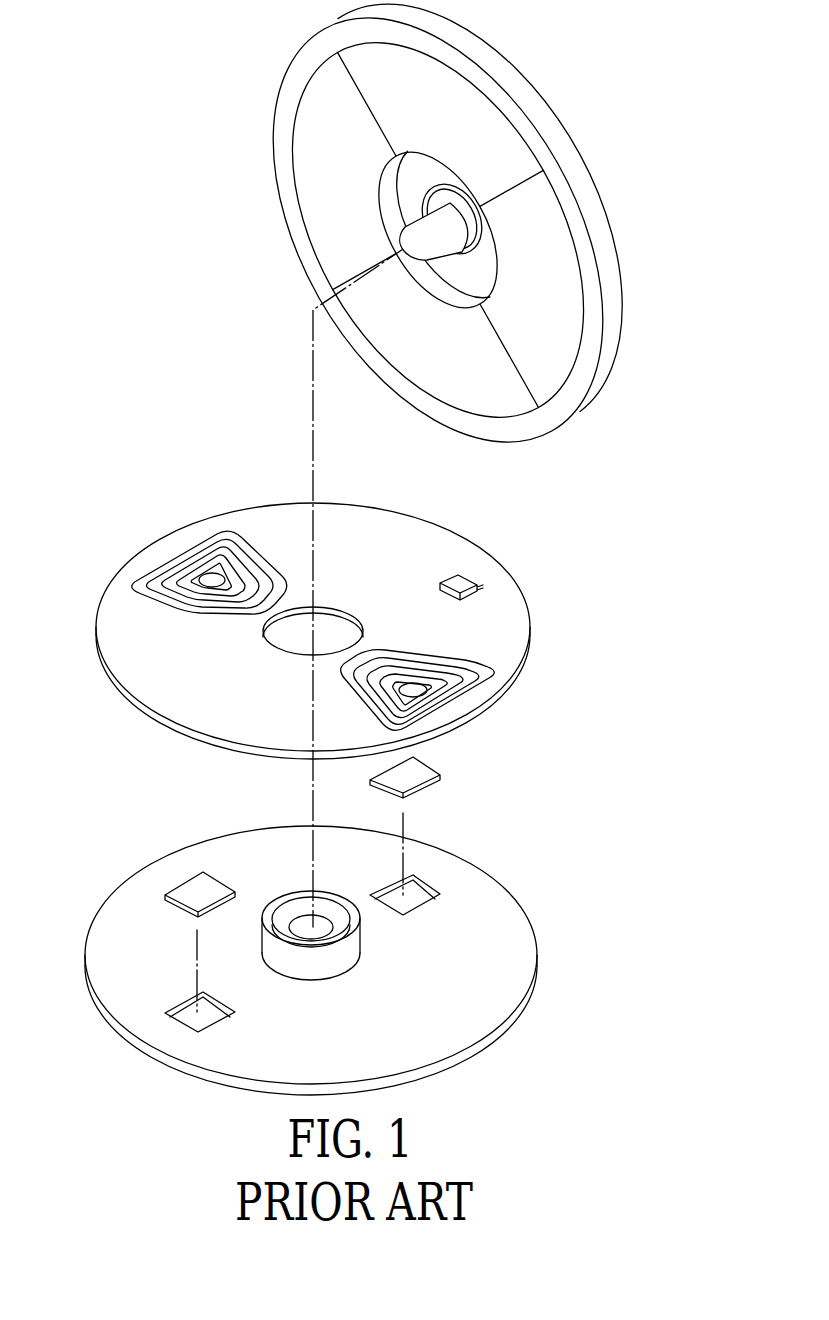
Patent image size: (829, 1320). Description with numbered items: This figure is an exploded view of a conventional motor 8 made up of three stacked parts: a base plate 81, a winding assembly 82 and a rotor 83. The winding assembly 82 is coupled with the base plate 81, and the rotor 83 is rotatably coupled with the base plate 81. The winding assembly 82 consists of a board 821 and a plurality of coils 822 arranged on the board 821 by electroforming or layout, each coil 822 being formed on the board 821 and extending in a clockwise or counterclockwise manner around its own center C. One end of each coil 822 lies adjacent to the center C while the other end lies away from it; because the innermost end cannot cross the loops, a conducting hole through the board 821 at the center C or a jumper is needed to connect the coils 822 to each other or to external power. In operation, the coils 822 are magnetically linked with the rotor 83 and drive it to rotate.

The motor 8 is at (153, 183).
The rotor 83 is at (545, 106).
The winding assembly 82 is at (516, 539).
The board 821 is at (505, 618).
The coils 822 is at (207, 540).
The center C is at (207, 578).
The base plate 81 is at (493, 918).